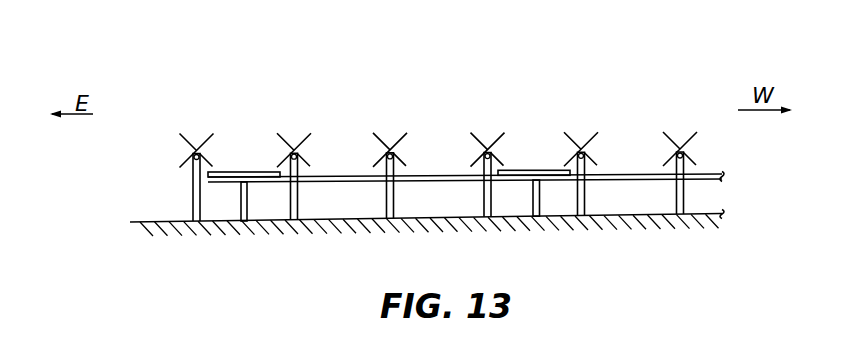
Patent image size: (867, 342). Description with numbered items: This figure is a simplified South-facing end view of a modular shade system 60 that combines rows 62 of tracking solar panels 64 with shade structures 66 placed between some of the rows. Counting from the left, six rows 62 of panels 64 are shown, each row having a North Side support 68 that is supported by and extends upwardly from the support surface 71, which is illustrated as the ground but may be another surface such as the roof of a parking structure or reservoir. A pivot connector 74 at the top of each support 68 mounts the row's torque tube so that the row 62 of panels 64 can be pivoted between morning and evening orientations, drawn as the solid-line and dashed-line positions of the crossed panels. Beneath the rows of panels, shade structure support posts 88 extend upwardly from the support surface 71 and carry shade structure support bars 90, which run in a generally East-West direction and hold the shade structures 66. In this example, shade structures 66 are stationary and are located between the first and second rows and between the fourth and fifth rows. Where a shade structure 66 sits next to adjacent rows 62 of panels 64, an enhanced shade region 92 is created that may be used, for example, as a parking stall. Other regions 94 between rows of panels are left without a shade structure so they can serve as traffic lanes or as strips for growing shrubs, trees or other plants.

The modular shade system 60 is at (679, 48).
The rows 62 is at (209, 111).
The tracking solar panels 64 is at (301, 139).
The shade structures 66 is at (257, 172).
The North Side support 68 is at (193, 198).
The support surface 71 is at (166, 221).
The pivot connectors 74 is at (193, 161).
The shade structure support posts 88 is at (243, 203).
The shade structure support bars 90 is at (441, 183).
The enhanced shade regions 92 is at (284, 212).
The regions 94 is at (360, 212).